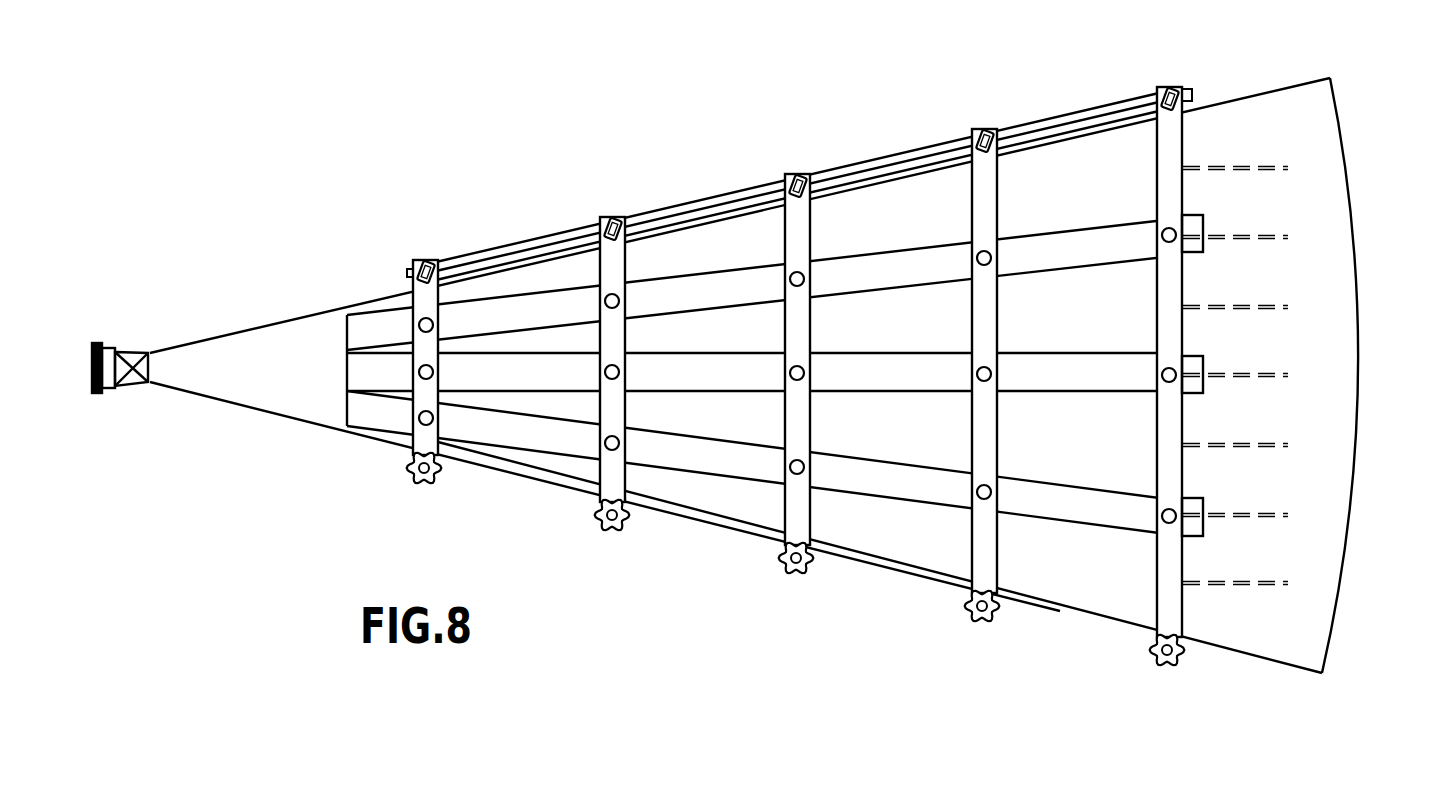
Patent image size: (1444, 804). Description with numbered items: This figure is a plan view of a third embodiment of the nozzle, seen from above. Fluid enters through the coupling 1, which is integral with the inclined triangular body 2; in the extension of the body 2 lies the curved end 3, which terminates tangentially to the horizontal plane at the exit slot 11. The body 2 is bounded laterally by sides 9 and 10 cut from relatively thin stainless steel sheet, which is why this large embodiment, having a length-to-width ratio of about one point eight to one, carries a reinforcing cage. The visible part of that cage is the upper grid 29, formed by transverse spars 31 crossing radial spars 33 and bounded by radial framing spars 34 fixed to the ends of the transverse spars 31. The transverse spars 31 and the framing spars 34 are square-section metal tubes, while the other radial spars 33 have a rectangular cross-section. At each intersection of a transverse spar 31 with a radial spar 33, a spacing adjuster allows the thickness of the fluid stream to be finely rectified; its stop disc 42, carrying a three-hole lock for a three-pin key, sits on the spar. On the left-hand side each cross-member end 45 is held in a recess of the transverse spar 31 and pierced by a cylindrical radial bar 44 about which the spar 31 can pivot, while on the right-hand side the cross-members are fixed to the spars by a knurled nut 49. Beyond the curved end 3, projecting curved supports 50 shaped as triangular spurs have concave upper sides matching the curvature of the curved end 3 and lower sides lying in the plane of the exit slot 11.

The coupling 1 is at (120, 352).
The inclined triangular body 2 is at (903, 218).
The curved end 3 is at (1278, 117).
The side 9 is at (290, 318).
The side 10 is at (280, 418).
The exit slot 11 is at (1362, 362).
The upper grid 29 is at (370, 312).
The transverse spar 31 is at (990, 222).
The radial spar 33 is at (1107, 247).
The radial framing spar 34 is at (702, 230).
The stop disc 42 is at (977, 257).
The cylindrical radial bar 44 is at (505, 250).
The upper end of cross-member 45 is at (606, 221).
The knurled nut 49 is at (605, 530).
The projecting curved support 50 is at (1290, 168).